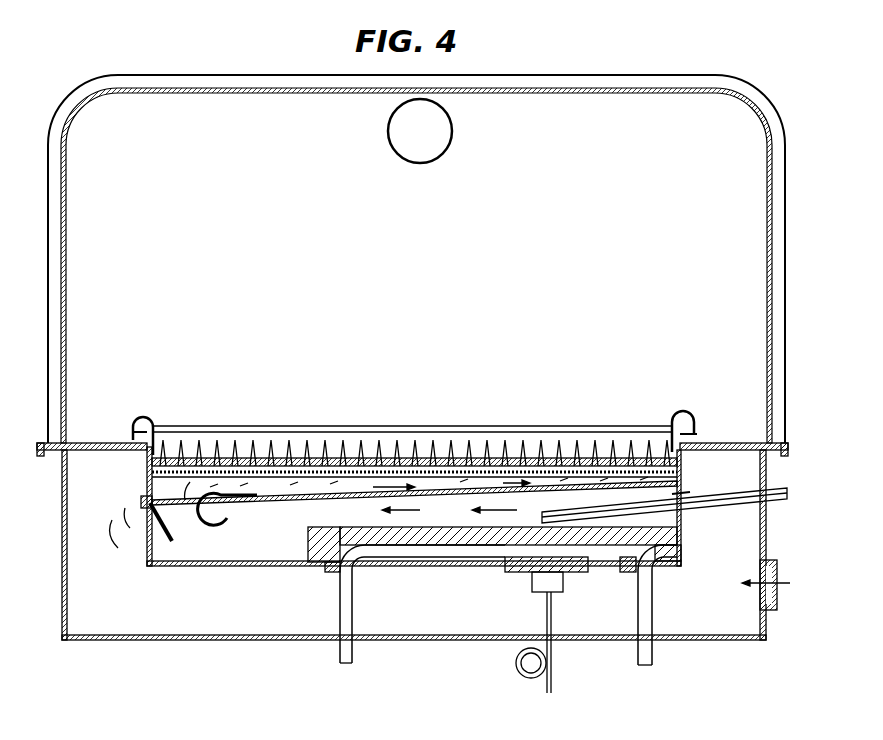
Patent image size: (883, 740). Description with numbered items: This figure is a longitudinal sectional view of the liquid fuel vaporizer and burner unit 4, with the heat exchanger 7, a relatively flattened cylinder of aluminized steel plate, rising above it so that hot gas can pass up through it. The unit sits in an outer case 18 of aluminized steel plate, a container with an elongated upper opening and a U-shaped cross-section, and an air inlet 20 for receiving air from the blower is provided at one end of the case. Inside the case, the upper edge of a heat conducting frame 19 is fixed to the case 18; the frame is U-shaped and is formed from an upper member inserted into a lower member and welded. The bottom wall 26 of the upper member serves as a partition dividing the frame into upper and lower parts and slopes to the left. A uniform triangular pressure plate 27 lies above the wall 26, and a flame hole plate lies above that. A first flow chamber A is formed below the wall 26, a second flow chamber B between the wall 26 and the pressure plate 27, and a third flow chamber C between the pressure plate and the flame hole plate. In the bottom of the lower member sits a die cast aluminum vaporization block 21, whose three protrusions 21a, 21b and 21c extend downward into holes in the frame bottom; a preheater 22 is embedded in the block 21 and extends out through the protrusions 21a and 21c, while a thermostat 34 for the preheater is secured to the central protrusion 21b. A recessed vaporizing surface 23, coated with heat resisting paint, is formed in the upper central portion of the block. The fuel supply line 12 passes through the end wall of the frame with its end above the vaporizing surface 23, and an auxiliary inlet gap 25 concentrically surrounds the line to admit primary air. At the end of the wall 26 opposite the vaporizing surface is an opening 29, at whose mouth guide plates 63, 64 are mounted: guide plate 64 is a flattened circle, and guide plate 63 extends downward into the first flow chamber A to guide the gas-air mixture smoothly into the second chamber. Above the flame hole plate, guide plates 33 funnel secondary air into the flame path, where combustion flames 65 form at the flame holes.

The liquid fuel vaporizer and burner unit 4 is at (260, 642).
The heat exchanger 7 is at (787, 298).
The fuel supply line 12 is at (785, 490).
The outer case 18 is at (766, 530).
The heat conducting frame 19 is at (684, 553).
The air inlet 20 is at (777, 594).
The vaporization block 21 is at (335, 548).
The protrusion 21a is at (327, 573).
The central protrusion 21b is at (519, 573).
The protrusion 21c is at (626, 573).
The preheater 22 is at (654, 612).
The recessed vaporizing surface 23 is at (517, 520).
The auxiliary inlet gap 25 is at (685, 497).
The bottom wall 26 is at (258, 512).
The pressure plate 27 is at (147, 490).
The opening 29 is at (176, 548).
The guide plates 33 is at (168, 430).
The thermostat 34 is at (566, 592).
The guide plate 63 is at (145, 540).
The guide plate 64 is at (232, 515).
The combustion flames 65 is at (618, 450).
The first flow chamber A is at (302, 528).
The second flow chamber B is at (147, 497).
The third flow chamber C is at (147, 478).